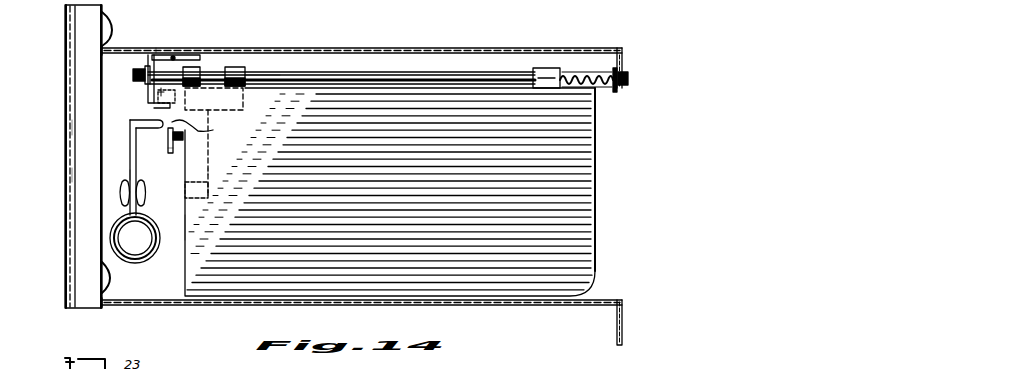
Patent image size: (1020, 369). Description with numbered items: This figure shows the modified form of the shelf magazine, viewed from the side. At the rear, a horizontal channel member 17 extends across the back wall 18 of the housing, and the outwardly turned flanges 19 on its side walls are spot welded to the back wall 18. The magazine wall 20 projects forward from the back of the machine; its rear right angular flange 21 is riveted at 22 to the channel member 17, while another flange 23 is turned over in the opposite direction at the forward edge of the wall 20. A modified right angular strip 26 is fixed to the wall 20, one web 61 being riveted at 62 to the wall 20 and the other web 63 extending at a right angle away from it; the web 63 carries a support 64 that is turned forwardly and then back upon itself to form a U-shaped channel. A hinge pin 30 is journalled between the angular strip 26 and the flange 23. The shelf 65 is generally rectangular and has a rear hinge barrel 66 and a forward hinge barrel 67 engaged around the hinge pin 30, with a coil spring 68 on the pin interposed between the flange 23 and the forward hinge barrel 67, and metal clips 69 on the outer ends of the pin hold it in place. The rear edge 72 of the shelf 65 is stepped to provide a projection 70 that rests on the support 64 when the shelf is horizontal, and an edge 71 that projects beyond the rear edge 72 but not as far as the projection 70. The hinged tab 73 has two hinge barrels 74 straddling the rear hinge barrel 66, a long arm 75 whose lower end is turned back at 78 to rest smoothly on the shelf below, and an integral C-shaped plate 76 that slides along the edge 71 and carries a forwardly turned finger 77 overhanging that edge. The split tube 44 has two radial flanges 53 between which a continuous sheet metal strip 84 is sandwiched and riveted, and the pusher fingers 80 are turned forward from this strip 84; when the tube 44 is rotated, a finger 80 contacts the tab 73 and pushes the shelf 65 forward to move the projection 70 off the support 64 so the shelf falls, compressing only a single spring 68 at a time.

The channel member 17 is at (86, 63).
The back wall 18 is at (70, 126).
The outwardly turned flange 19 is at (78, 173).
The wall 20 is at (437, 49).
The right angular flange 21 is at (106, 48).
The rivet 22 is at (110, 30).
The flange 23 is at (623, 60).
The right angular strip 26 is at (160, 49).
The hinge pin 30 is at (475, 71).
The tube 44 is at (155, 252).
The radial flange 53 is at (122, 213).
The web 61 is at (192, 74).
The rivet 62 is at (180, 56).
The web 63 is at (148, 100).
The support 64 is at (176, 107).
The shelf 65 is at (390, 192).
The hinge barrel 66 is at (228, 64).
The hinge barrel 67 is at (555, 68).
The coil spring 68 is at (606, 90).
The metal clip 69 is at (142, 84).
The projection 70 is at (214, 99).
The edge 71 is at (203, 129).
The rear edge 72 is at (185, 228).
The hinged tab 73 is at (212, 170).
The hinge barrel 74 is at (220, 70).
The arm 75 is at (210, 150).
The C-shaped plate 76 is at (168, 146).
The finger 77 is at (183, 136).
The turned-back lower end 78 is at (183, 186).
The pusher finger 80 is at (130, 128).
The continuous sheet metal strip 84 is at (130, 172).